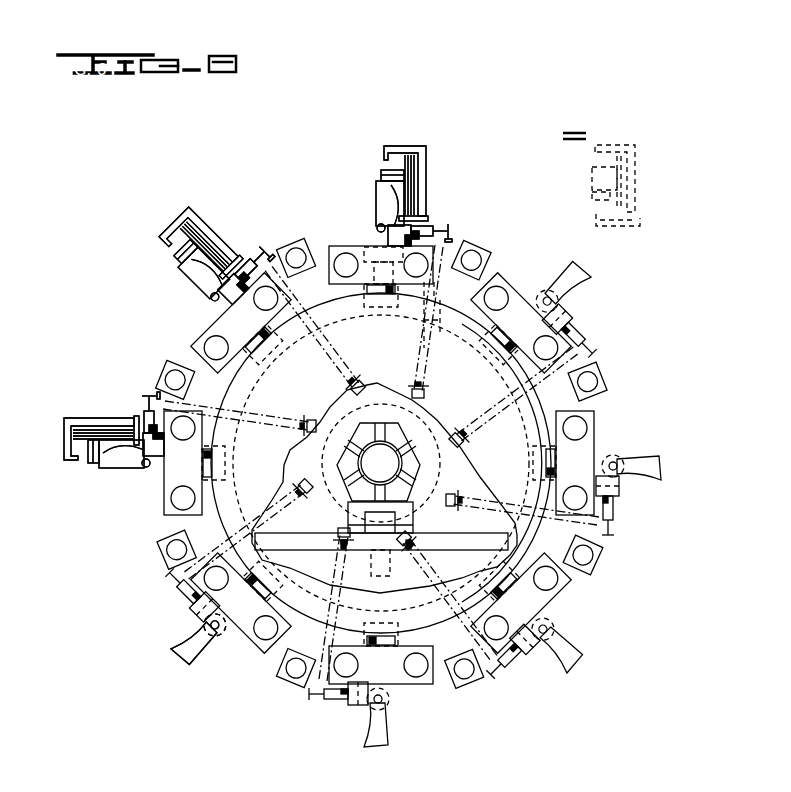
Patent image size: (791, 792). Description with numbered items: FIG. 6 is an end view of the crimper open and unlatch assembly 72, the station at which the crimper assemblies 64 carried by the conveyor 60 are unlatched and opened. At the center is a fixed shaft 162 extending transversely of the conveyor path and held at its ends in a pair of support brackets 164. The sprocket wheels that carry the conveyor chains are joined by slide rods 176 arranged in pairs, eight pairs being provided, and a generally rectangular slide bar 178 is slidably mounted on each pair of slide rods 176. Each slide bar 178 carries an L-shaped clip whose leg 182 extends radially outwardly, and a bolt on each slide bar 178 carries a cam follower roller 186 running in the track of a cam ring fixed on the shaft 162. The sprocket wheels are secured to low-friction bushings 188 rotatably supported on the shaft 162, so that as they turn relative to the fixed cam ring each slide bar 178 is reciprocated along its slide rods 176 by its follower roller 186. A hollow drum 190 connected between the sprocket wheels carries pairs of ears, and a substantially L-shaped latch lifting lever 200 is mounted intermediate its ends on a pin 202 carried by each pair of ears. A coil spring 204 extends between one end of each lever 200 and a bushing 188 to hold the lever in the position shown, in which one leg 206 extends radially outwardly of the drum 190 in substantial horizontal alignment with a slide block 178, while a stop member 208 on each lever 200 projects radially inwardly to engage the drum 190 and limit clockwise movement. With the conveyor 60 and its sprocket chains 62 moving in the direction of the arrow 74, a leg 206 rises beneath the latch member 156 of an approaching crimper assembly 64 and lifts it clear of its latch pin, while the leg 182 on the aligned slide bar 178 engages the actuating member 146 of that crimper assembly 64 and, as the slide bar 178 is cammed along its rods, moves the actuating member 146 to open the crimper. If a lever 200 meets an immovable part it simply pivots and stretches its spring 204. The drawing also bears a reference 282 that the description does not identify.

The conveyor 60 is at (647, 156).
The sprocket chain 62 is at (434, 159).
The crimper assembly 64 is at (209, 201).
The crimper open and unlatch assembly 72 is at (634, 396).
The arrow 74 is at (528, 135).
The actuating member 146 is at (407, 148).
The latch member 156 is at (385, 160).
The fixed shaft 162 is at (392, 465).
The support brackets 164 is at (441, 552).
The slide rods 176 is at (263, 303).
The slide bar 178 is at (400, 296).
The leg 182 is at (416, 230).
The cam follower roller 186 is at (374, 292).
The bushing 188 is at (436, 414).
The hollow drum 190 is at (325, 240).
The latch lifting lever 200 is at (380, 197).
The pin 202 is at (376, 225).
The coil spring 204 is at (492, 382).
The leg 206 is at (375, 180).
The stop member 208 is at (256, 272).
The stop block 282 is at (617, 488).